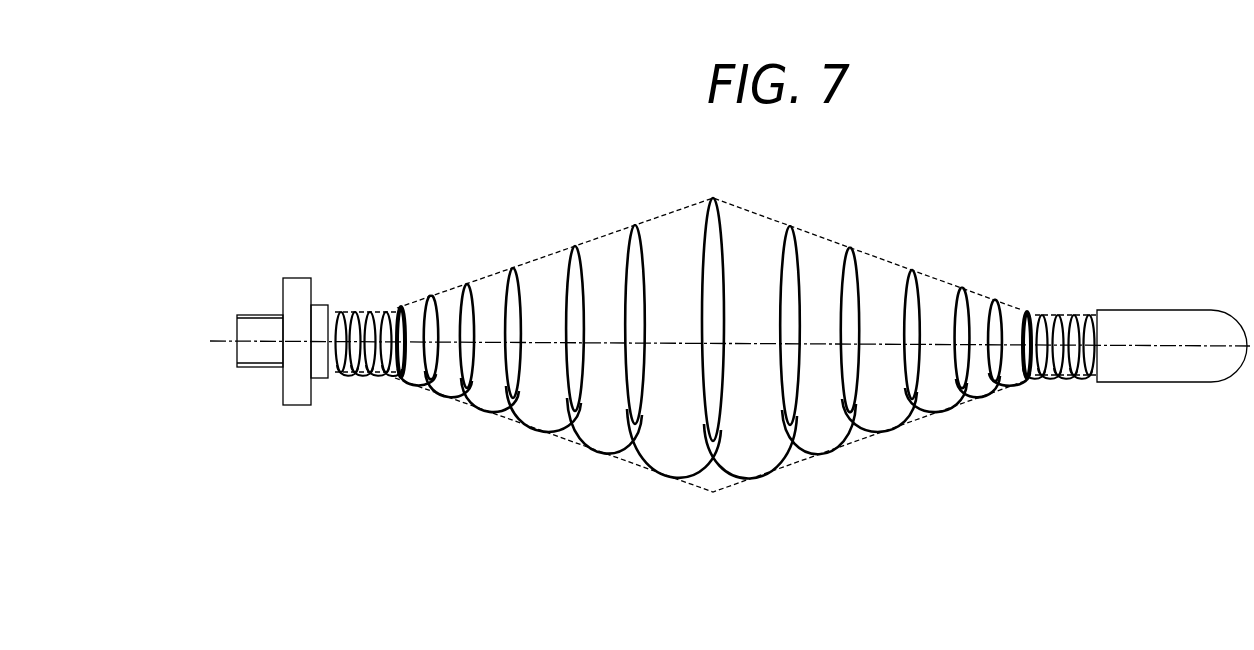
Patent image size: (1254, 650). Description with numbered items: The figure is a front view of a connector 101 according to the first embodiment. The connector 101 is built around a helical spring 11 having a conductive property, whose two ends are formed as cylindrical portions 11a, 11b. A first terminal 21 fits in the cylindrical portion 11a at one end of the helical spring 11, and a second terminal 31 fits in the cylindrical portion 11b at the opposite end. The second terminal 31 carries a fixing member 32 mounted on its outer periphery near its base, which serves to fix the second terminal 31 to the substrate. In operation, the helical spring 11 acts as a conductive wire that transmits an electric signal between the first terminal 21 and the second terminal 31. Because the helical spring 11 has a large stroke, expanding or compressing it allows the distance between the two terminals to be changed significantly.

The connector 101 is at (985, 243).
The helical spring 11 is at (798, 247).
The cylindrical portion 11a is at (1090, 397).
The cylindrical portion 11b is at (392, 392).
The first terminal 21 is at (1187, 372).
The second terminal 31 is at (250, 313).
The fixing member 32 is at (297, 278).